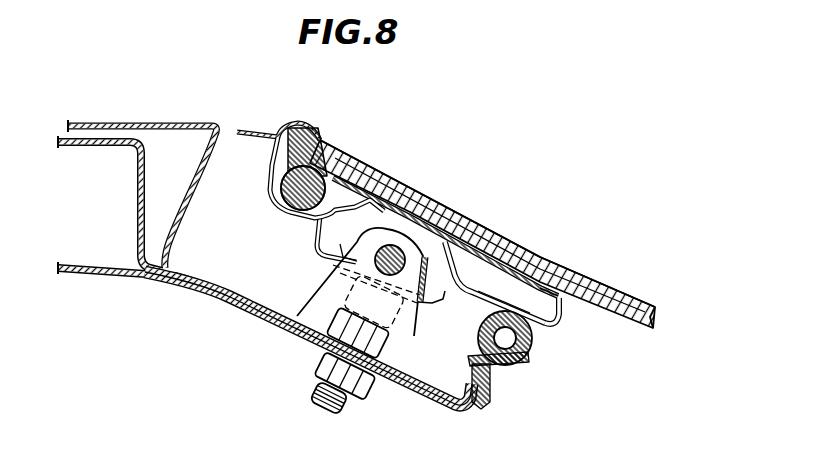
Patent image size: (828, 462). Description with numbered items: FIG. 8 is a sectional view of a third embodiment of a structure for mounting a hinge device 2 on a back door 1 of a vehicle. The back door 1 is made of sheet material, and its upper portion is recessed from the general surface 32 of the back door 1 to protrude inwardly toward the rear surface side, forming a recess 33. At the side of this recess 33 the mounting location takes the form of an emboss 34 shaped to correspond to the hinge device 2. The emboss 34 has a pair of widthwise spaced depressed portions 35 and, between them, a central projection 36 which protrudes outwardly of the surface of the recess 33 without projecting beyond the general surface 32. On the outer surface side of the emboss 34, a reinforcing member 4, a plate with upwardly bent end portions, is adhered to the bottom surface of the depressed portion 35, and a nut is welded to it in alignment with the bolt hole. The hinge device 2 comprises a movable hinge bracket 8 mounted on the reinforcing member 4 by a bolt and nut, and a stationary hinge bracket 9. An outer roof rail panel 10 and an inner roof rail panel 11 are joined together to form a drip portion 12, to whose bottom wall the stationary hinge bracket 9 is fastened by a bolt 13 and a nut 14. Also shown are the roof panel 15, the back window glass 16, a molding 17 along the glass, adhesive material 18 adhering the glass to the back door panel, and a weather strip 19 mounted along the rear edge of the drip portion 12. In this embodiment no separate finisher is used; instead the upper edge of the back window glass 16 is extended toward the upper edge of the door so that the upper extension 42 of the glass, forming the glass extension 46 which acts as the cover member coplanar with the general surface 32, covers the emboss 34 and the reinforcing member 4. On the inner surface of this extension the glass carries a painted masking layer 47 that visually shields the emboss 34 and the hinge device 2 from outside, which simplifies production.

The back door 1 is at (340, 141).
The hinge device 2 is at (320, 228).
The reinforcing member 4 is at (377, 196).
The movable hinge bracket 8 is at (471, 270).
The stationary hinge bracket 9 is at (311, 292).
The outer roof rail panel 10 is at (137, 193).
The inner roof rail panel 11 is at (118, 276).
The drip portion 12 is at (207, 293).
The bolt 13 is at (392, 376).
The nut 14 is at (322, 367).
The roof panel 15 is at (155, 122).
The back window glass 16 is at (622, 292).
The molding 17 is at (311, 126).
The adhesive material 18 is at (285, 204).
The weather strip 19 is at (527, 368).
The general surface 32 is at (641, 298).
The recess 33 is at (557, 267).
The emboss 34 is at (520, 301).
The depressed portion 35 is at (255, 302).
The central projection 36 is at (434, 224).
The upper extension of the glass 42 is at (381, 161).
The extension of back door window glass 46 is at (545, 266).
The painted masking layer 47 is at (557, 303).